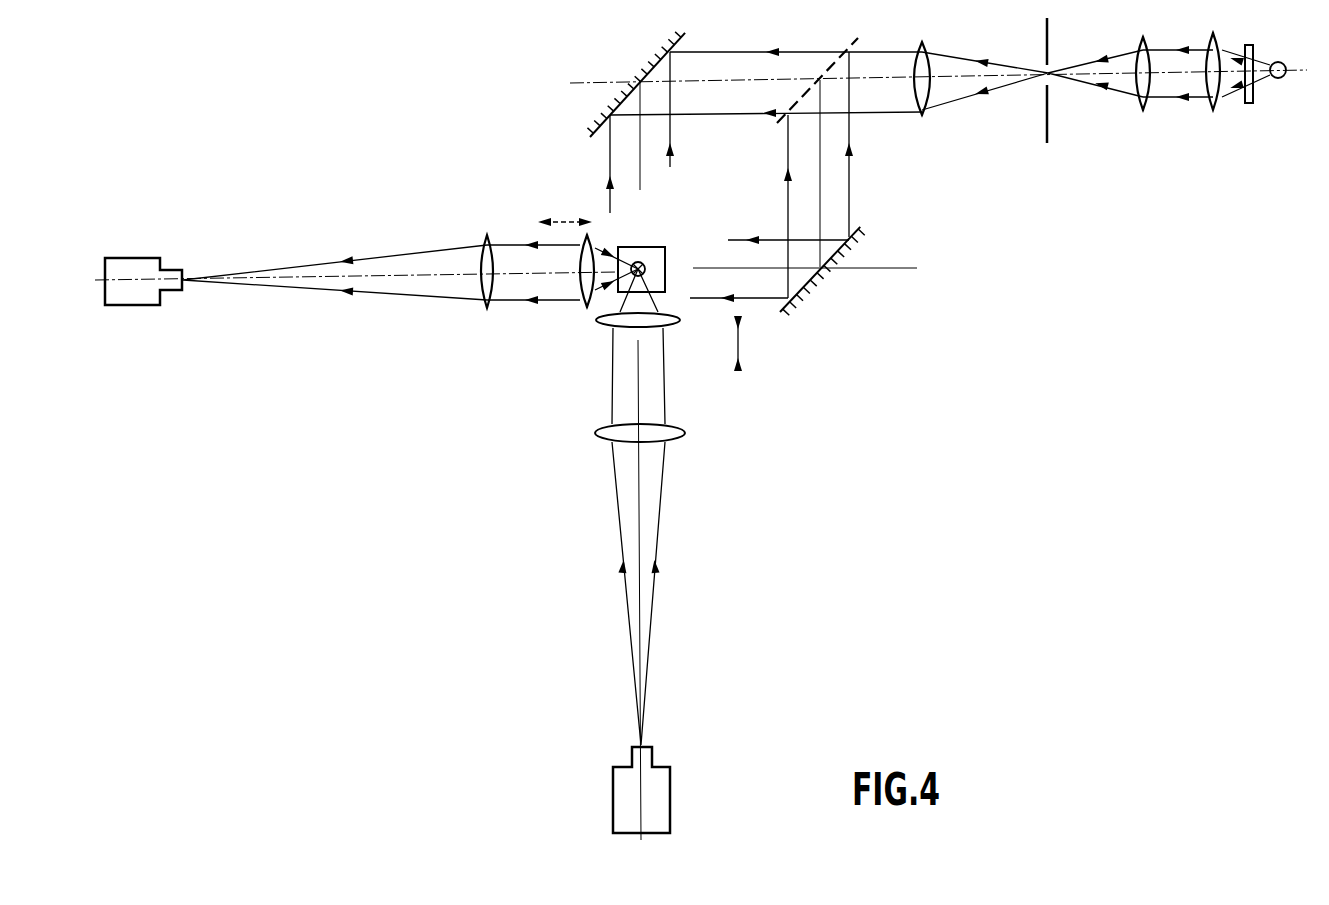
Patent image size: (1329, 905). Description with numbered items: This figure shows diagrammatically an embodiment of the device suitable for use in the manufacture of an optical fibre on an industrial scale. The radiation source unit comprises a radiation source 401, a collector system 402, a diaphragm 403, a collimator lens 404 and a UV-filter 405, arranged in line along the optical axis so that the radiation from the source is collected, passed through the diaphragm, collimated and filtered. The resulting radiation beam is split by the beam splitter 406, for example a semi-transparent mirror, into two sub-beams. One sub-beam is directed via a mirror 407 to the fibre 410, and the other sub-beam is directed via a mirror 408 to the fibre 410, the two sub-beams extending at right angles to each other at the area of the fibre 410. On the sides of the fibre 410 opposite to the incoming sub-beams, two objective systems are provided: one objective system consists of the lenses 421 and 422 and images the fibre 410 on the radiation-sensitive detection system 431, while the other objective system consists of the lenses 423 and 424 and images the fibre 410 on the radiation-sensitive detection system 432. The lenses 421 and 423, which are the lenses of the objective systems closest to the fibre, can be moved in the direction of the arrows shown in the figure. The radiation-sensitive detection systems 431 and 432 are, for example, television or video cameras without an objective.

The radiation source 401 is at (1285, 63).
The collector system 402 is at (1225, 127).
The diaphragm 403 is at (1050, 67).
The collimator lens 404 is at (926, 46).
The UV-filter 405 is at (1260, 38).
The beam splitter 406 is at (845, 42).
The mirror 407 is at (642, 75).
The mirror 408 is at (860, 233).
The fibre 410 is at (645, 262).
The lens 421 is at (588, 300).
The lens 422 is at (487, 307).
The lens 423 is at (668, 323).
The lens 424 is at (672, 435).
The radiation-sensitive detection system 431 is at (133, 263).
The radiation-sensitive detection system 432 is at (662, 788).